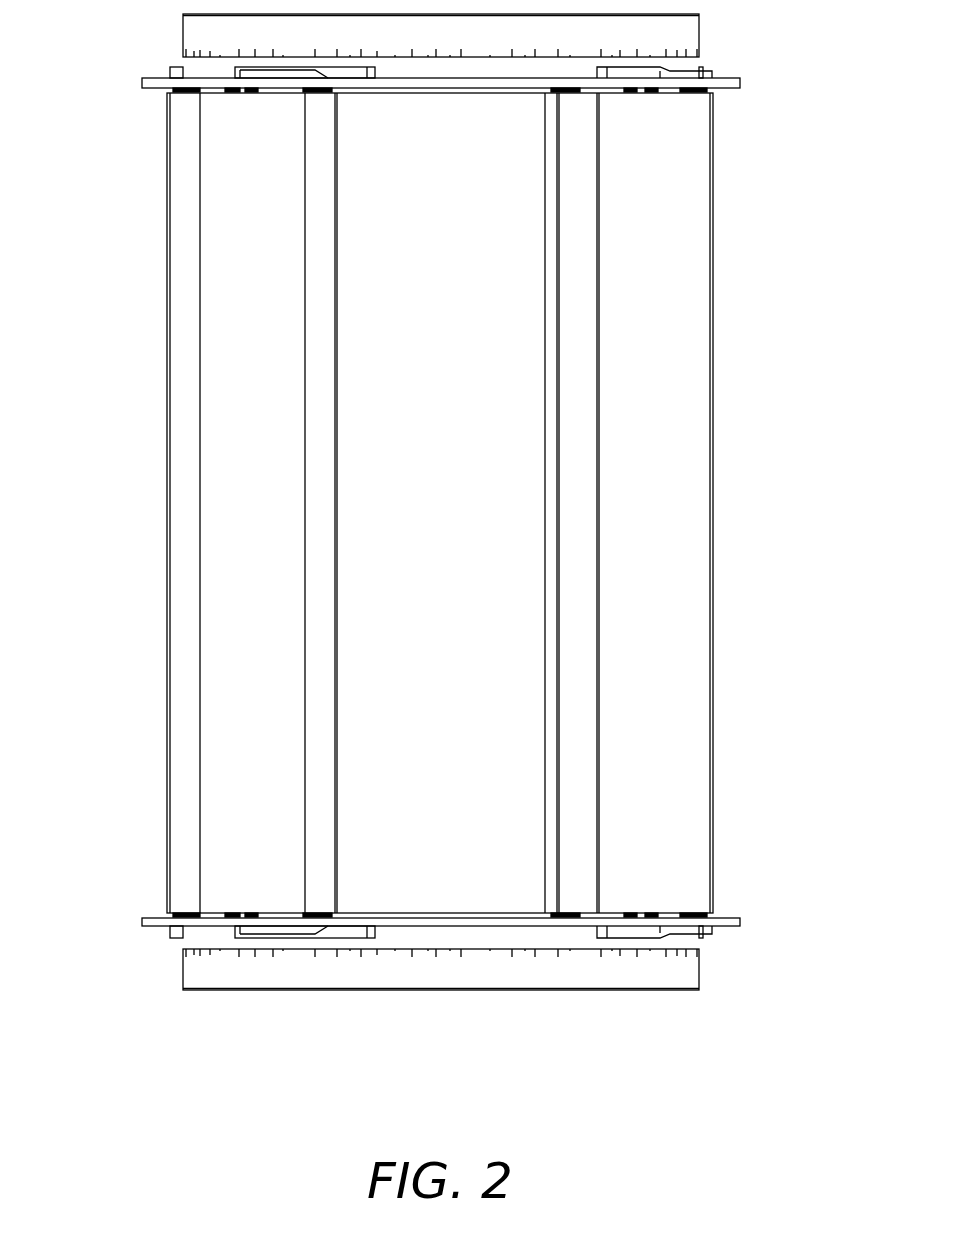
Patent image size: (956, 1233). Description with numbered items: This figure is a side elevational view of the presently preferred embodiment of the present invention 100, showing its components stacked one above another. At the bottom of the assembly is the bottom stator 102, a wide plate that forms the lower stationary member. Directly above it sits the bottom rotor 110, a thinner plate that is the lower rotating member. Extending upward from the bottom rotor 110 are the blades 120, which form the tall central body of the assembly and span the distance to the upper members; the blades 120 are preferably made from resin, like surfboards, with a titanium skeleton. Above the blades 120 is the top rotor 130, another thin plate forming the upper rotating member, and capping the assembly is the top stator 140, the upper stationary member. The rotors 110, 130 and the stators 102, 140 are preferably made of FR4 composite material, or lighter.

The present invention 100 is at (751, 368).
The bottom stator 102 is at (183, 970).
The bottom rotor 110 is at (142, 921).
The blades 120 is at (168, 503).
The top rotor 130 is at (142, 81).
The top stator 140 is at (183, 33).